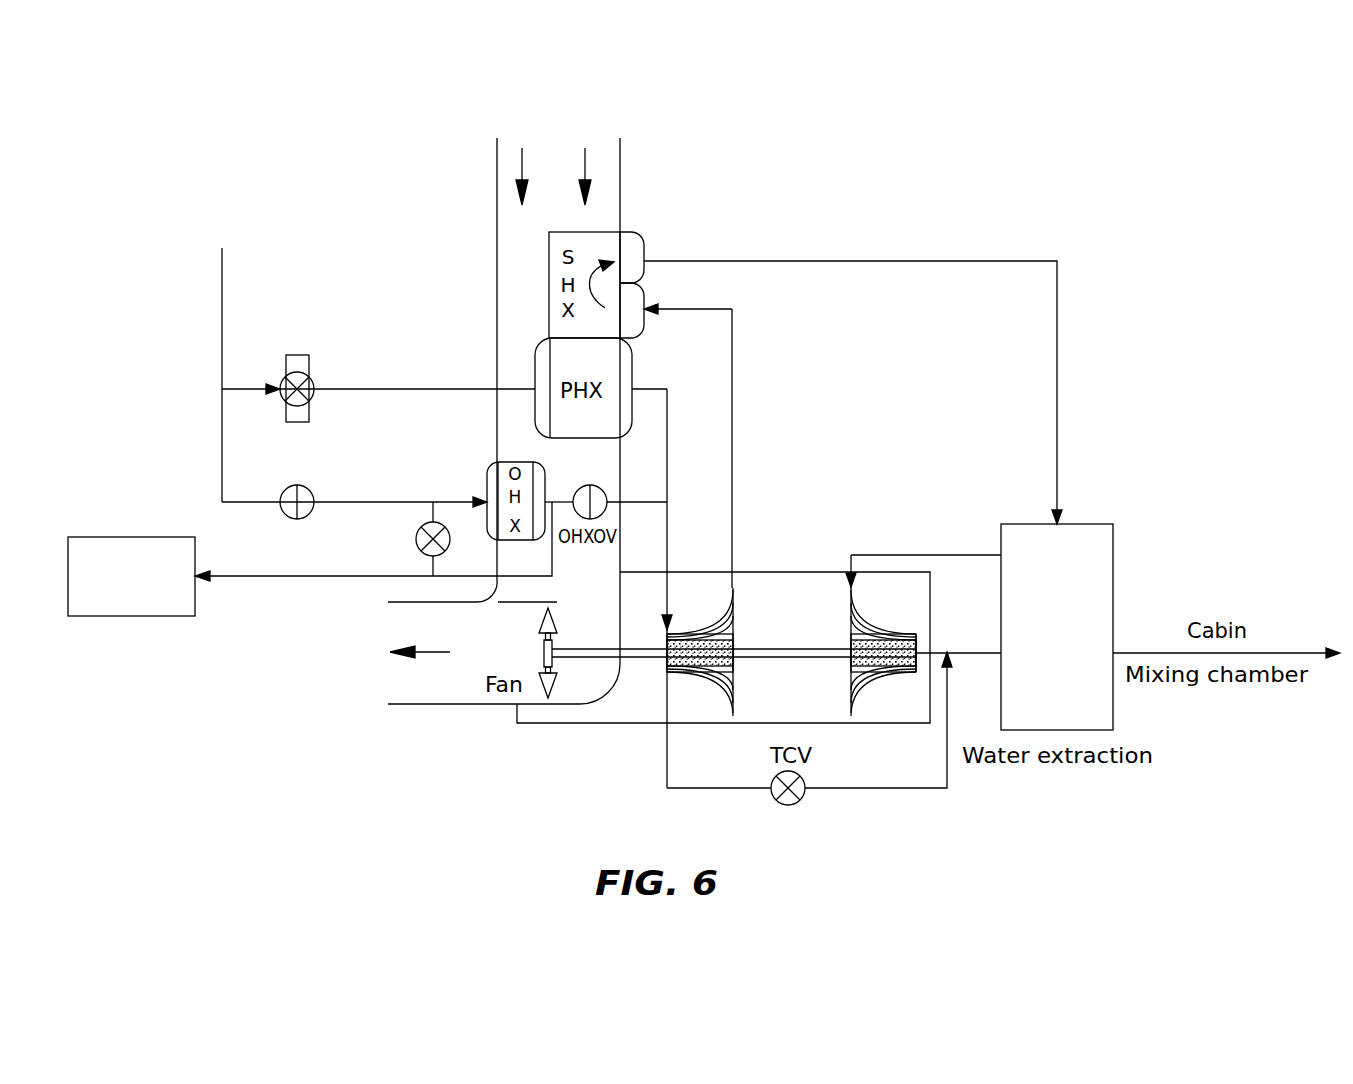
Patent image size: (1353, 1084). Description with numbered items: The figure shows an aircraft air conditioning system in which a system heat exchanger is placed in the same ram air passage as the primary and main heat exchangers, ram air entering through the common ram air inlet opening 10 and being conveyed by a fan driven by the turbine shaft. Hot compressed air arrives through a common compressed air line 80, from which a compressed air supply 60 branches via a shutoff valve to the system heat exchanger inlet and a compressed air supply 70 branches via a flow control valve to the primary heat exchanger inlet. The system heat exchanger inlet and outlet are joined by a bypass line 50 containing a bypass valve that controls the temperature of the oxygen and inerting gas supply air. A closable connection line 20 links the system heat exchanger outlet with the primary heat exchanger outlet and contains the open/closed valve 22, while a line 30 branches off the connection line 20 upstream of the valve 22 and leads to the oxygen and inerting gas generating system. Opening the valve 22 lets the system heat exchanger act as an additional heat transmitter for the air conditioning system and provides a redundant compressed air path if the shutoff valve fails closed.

The common ram air inlet opening 10 is at (600, 148).
The connection line 20 is at (638, 495).
The open/closed valve 22 is at (605, 510).
The line 30 is at (290, 577).
The bypass line 50 is at (447, 500).
The compressed air supply 60 is at (252, 500).
The compressed air supply 70 is at (402, 385).
The common compressed air line 80 is at (220, 307).